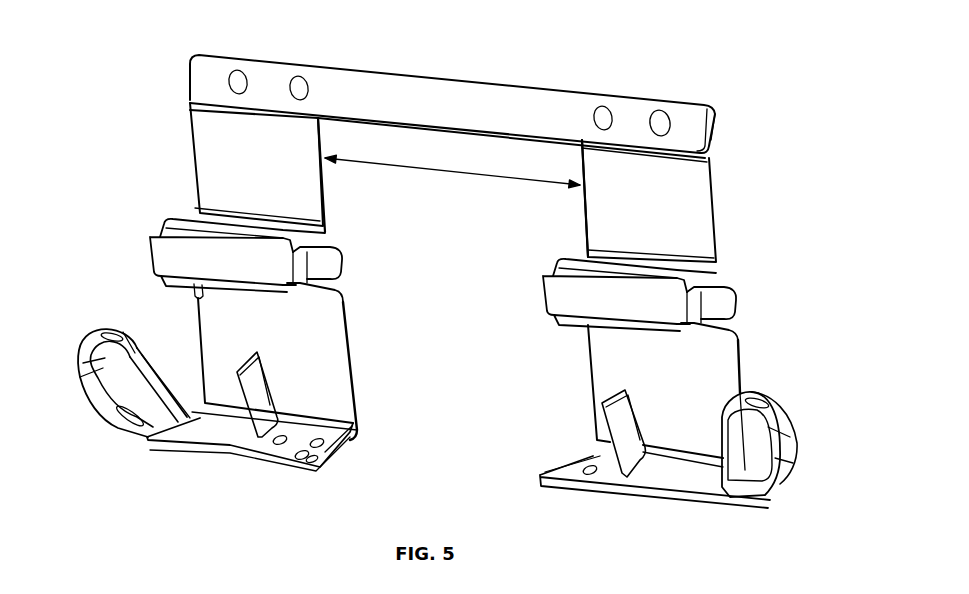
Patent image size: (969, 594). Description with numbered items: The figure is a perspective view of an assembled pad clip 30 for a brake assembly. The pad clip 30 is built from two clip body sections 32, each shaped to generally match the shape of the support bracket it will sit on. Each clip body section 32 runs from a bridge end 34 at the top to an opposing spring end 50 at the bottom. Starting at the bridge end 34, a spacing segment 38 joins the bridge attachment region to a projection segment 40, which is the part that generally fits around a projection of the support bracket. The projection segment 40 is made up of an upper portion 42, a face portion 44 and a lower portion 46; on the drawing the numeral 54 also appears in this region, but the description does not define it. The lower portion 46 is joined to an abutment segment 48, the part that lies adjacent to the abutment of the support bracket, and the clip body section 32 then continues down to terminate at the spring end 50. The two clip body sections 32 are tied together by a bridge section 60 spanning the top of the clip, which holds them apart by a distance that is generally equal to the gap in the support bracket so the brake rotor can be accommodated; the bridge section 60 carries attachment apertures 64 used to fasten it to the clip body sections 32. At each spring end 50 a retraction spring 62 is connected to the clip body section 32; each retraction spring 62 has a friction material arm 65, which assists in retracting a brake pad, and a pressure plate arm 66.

The pad clip 30 is at (143, 88).
The bridge section 60 is at (460, 103).
The attachment apertures 64 is at (660, 122).
The bridge end 34 is at (715, 107).
The spacing segment 38 is at (660, 188).
The upper portion 42 is at (200, 222).
The face portion 44 is at (170, 253).
The lower portion 46 is at (197, 296).
The retaining tab 54 is at (330, 258).
The projection segment 40 is at (727, 258).
The abutment segment 48 is at (705, 375).
The clip body sections 32 is at (350, 337).
The friction material arm 65 is at (253, 390).
The spring end 50 is at (645, 489).
The retraction spring 62 is at (786, 455).
The pressure plate arm 66 is at (158, 395).